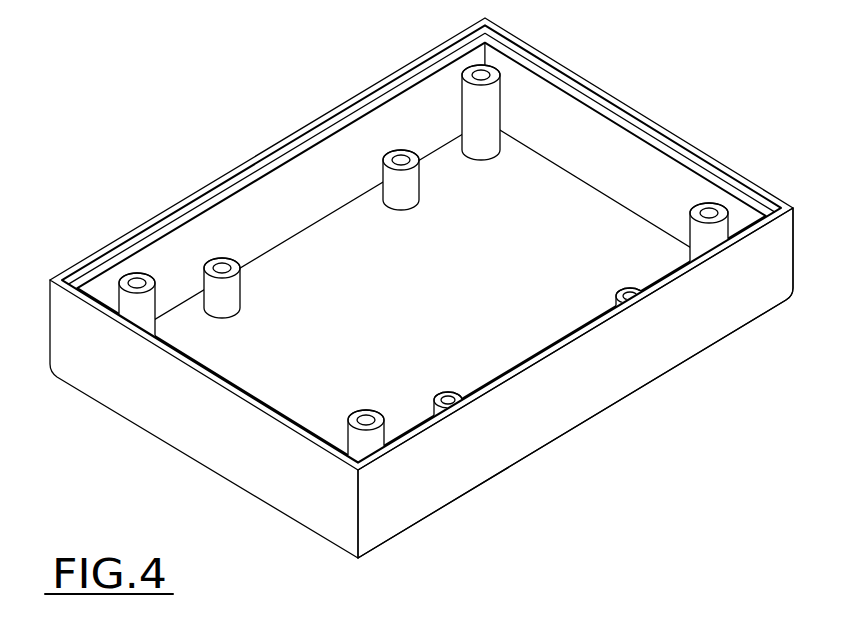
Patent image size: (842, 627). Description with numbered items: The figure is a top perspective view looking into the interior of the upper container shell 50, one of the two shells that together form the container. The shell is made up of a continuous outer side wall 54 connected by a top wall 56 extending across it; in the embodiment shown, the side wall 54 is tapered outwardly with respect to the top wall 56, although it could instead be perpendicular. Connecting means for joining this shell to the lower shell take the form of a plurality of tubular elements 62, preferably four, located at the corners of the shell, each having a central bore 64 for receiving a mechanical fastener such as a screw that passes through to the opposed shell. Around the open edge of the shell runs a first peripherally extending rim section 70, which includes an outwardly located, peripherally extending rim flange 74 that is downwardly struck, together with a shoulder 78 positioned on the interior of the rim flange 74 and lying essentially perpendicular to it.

The upper container shell 50 is at (421, 288).
The outer side wall 54 is at (650, 353).
The top wall 56 is at (508, 252).
The tubular element 62 is at (477, 245).
The central bore 64 is at (487, 72).
The first peripherally extending rim section 70 is at (423, 54).
The rim flange 74 is at (283, 137).
The shoulder 78 is at (232, 190).